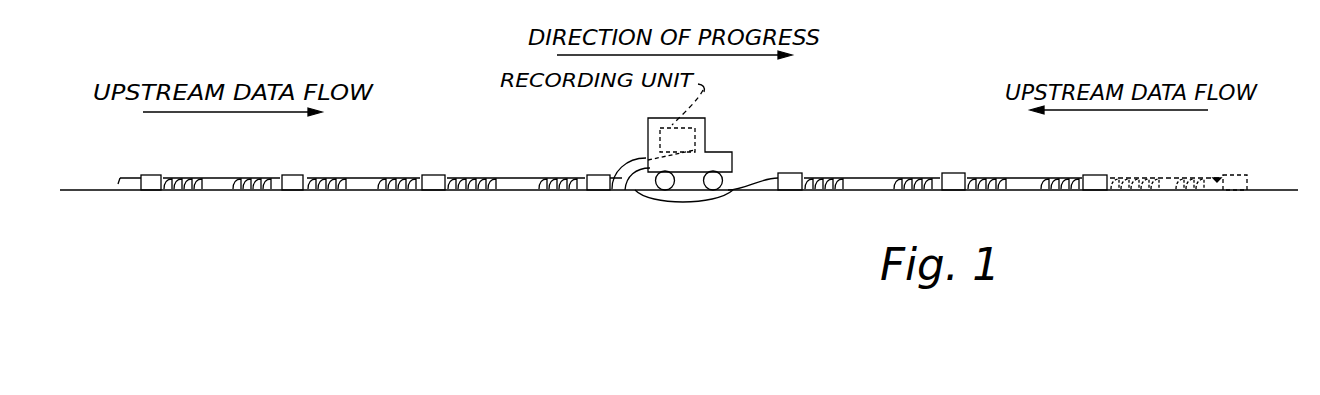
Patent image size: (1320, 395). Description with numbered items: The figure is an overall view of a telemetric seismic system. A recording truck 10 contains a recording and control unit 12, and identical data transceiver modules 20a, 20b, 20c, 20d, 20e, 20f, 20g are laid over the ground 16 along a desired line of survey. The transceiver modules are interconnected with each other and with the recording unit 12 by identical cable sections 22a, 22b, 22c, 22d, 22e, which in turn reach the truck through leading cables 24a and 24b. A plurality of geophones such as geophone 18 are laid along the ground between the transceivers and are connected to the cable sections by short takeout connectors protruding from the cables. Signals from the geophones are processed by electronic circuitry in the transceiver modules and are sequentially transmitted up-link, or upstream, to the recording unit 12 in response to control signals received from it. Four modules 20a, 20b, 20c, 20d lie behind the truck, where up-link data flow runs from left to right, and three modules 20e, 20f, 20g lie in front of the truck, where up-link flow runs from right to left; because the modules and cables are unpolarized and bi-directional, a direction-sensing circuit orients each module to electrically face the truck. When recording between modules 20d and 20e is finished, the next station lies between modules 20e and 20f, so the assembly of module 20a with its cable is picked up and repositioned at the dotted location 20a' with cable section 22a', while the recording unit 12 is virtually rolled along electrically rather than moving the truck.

The recording truck 10 is at (648, 122).
The recording and control unit 12 is at (697, 135).
The ground 16 is at (760, 192).
The geophone 18 is at (317, 192).
The data transceiver module 20a is at (140, 160).
The data transceiver module 20b is at (290, 175).
The data transceiver module 20c is at (440, 175).
The data transceiver module 20d is at (593, 175).
The data transceiver module 20e is at (790, 173).
The data transceiver module 20f is at (953, 173).
The data transceiver module 20g is at (1095, 175).
The repositioned transceiver module location 20a' is at (1249, 159).
The cable section 22a is at (218, 165).
The cable section 22b is at (374, 150).
The cable section 22c is at (525, 150).
The cable section 22d is at (860, 178).
The cable section 22e is at (1013, 178).
The repositioned cable section 22a' is at (1158, 166).
The leading cable 24a is at (622, 190).
The leading cable 24b is at (674, 202).